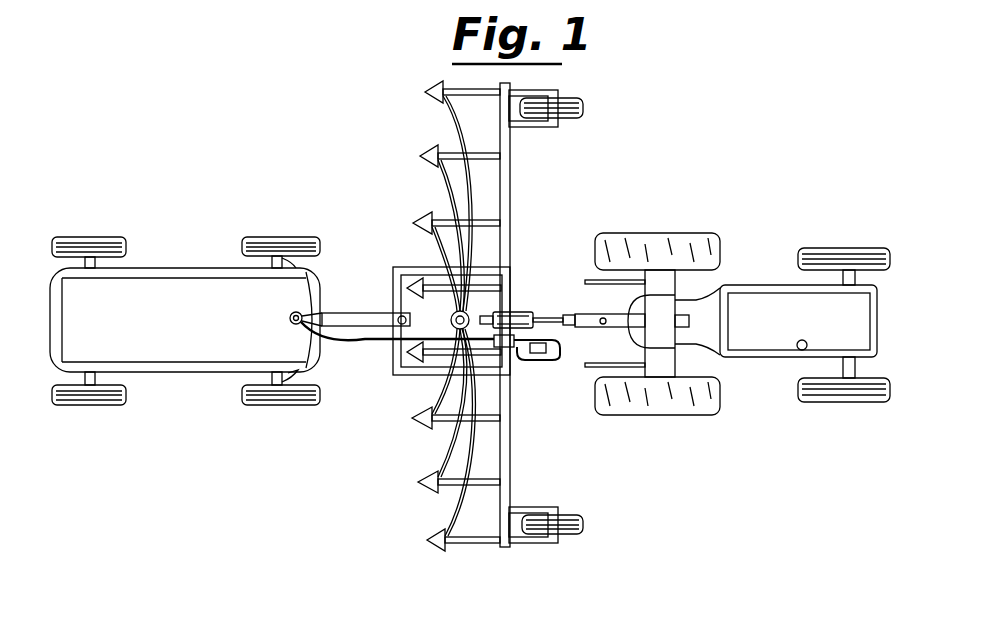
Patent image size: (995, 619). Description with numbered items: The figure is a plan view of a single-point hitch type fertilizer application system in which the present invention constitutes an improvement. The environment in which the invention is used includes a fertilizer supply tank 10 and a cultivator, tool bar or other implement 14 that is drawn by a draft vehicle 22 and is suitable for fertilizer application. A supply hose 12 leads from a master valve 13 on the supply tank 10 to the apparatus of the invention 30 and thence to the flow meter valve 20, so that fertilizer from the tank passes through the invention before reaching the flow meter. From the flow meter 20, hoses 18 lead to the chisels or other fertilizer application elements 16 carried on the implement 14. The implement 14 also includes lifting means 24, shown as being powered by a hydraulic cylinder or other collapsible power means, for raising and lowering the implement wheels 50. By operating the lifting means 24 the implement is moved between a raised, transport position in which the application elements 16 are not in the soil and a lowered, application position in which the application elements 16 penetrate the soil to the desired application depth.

The fertilizer supply tank 10 is at (208, 329).
The supply hose 12 is at (386, 350).
The master valve 13 is at (302, 314).
The implement 14 is at (424, 264).
The fertilizer application elements 16 is at (434, 148).
The hoses 18 is at (462, 252).
The flow meter valve 20 is at (470, 312).
The draft vehicle 22 is at (812, 331).
The lifting means 24 is at (521, 310).
The apparatus of the invention 30 is at (520, 349).
The implement wheels 50 is at (583, 112).